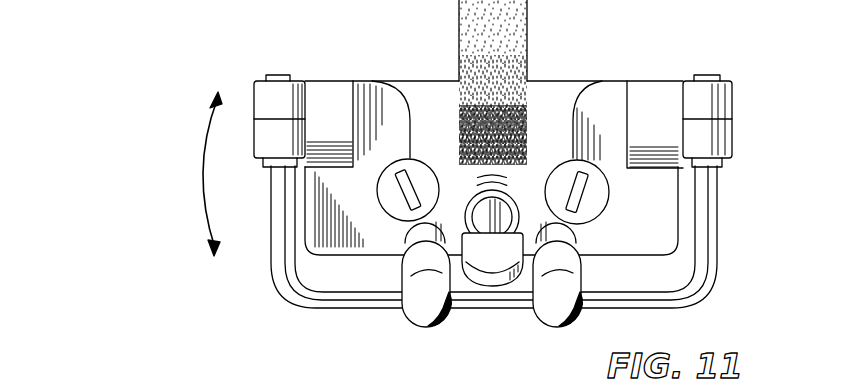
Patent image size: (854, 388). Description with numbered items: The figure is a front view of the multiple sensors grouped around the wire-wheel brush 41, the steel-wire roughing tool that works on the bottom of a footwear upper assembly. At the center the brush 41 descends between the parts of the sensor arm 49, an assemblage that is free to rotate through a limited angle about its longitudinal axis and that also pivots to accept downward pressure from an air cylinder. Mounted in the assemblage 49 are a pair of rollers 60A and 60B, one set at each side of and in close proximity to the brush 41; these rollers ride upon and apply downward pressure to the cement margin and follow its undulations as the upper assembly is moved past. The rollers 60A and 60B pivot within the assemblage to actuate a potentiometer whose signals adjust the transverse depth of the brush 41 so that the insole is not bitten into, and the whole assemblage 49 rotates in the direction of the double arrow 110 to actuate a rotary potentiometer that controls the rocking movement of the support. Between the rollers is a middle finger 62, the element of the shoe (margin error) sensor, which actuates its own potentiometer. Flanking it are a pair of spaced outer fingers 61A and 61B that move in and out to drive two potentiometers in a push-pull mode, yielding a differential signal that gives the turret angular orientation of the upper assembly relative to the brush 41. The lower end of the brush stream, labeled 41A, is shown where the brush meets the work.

The wire-wheel brush 41 is at (528, 62).
The spray stream lower end 41A is at (456, 178).
The sensor arm 49 is at (736, 141).
The roller 60A is at (394, 223).
The roller 60B is at (557, 159).
The outer finger 61A is at (425, 322).
The outer finger 61B is at (575, 322).
The middle finger 62 is at (497, 272).
The double arrow 110 is at (203, 152).